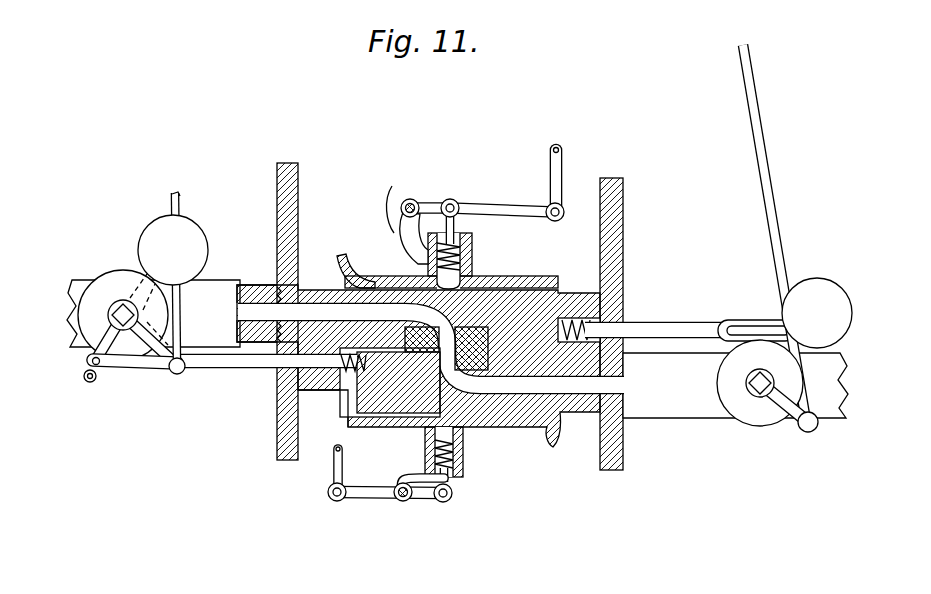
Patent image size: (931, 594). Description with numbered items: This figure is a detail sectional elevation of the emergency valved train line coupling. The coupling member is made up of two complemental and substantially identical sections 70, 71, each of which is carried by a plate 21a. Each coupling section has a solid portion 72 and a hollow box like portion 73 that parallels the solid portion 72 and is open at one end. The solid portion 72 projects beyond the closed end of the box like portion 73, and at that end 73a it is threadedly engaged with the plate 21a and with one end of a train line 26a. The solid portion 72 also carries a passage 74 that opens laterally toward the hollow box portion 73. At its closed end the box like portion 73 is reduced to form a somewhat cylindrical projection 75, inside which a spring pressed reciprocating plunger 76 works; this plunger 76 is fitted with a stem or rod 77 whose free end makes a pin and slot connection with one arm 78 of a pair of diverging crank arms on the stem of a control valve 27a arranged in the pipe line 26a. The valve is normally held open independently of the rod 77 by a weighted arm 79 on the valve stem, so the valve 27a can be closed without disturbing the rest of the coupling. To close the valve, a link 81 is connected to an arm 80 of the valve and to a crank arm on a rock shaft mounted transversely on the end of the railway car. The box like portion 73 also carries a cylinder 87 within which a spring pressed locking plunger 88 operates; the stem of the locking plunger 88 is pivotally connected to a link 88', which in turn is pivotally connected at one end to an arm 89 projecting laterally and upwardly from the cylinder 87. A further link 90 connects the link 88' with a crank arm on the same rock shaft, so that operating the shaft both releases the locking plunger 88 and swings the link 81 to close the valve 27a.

The plate 21a is at (300, 196).
The train line 26a is at (213, 292).
The control valve 27a is at (740, 415).
The coupling section 70 is at (330, 428).
The coupling section 71 is at (540, 276).
The solid portion 72 is at (393, 391).
The hollow box like portion 73 is at (367, 275).
The end of solid portion 73a is at (253, 330).
The passage 74 is at (305, 318).
The cylindrical projection 75 is at (626, 282).
The reciprocating plunger 76 is at (336, 389).
The stem or rod 77 is at (660, 333).
The crank arm 78 is at (722, 365).
The weighted arm 79 is at (150, 240).
The arm 80 is at (144, 337).
The link 81 is at (180, 204).
The cylinder 87 is at (473, 256).
The locking plunger 88 is at (400, 229).
The link 88' is at (482, 195).
The arm 89 is at (414, 195).
The link 90 is at (562, 163).